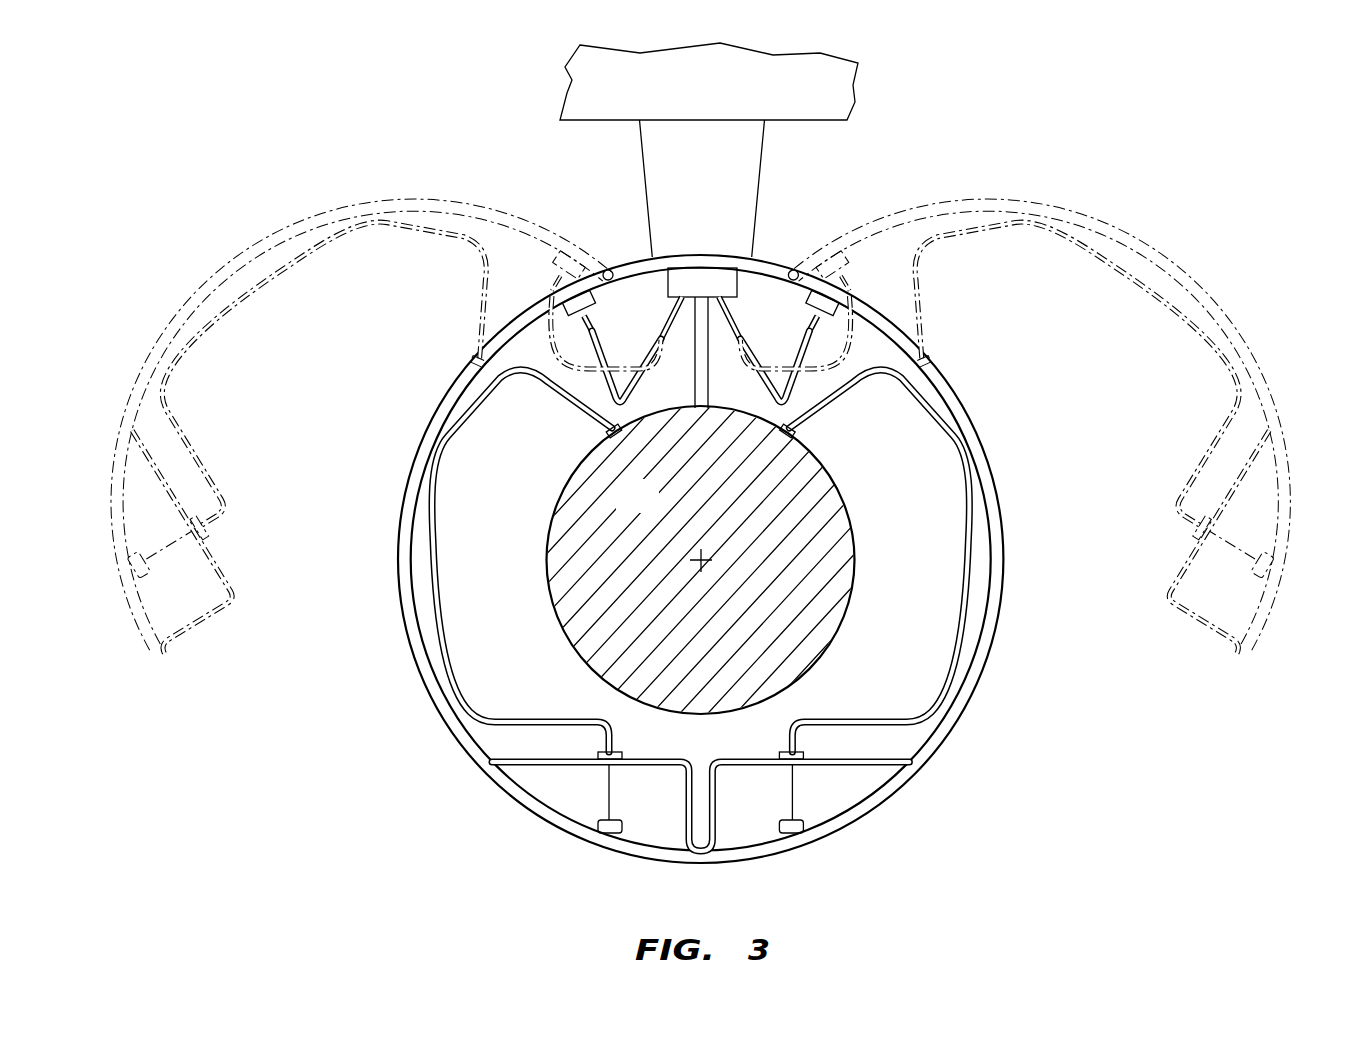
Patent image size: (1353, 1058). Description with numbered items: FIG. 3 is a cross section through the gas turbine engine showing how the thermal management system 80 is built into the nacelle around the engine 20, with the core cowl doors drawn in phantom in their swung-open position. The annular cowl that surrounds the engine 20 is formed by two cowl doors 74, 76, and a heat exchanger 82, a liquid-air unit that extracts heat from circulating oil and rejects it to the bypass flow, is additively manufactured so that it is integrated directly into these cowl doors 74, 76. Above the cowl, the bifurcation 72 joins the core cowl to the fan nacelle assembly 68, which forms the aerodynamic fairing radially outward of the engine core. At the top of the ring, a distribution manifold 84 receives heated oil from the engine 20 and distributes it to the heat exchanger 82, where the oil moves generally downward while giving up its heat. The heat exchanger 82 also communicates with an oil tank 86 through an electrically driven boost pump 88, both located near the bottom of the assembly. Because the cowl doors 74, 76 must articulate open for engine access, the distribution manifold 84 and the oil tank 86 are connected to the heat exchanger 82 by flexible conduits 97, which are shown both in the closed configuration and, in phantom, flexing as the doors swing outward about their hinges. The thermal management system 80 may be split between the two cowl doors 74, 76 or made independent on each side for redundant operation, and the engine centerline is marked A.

The engine 20 is at (655, 510).
The fan nacelle assembly 68 is at (722, 92).
The bifurcation 72 is at (721, 188).
The cowl door 74 is at (318, 215).
The cowl door 76 is at (1104, 225).
The thermal management system 80 is at (717, 518).
The heat exchanger 82 is at (456, 382).
The distribution manifold 84 is at (713, 284).
The oil tank 86 is at (580, 812).
The electrically driven boost pump 88 is at (636, 827).
The flexible conduits 97 is at (513, 332).
The axis A is at (703, 562).